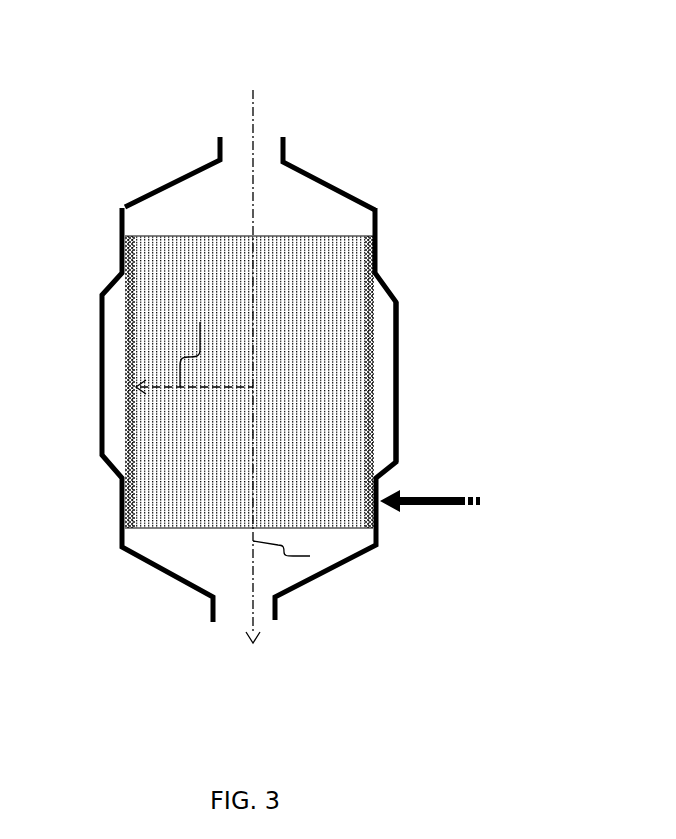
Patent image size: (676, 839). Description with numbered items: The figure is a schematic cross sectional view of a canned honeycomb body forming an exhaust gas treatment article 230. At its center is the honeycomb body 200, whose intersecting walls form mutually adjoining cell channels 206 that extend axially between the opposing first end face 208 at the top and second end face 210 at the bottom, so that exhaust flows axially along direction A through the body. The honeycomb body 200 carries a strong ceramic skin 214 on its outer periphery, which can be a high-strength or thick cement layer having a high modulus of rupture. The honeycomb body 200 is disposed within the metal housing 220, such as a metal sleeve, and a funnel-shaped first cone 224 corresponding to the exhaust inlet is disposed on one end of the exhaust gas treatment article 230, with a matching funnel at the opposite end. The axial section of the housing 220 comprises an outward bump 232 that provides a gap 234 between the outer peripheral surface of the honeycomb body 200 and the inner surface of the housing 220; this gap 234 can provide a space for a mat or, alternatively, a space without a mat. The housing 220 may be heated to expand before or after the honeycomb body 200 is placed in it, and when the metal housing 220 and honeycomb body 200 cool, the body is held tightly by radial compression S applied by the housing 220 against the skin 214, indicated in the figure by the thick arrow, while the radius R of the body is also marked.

The honeycomb body 200 is at (251, 428).
The cell channels 206 is at (330, 260).
The first end face 208 is at (180, 229).
The second end face 210 is at (204, 540).
The strong ceramic skin 214 is at (380, 313).
The metal housing 220 is at (391, 218).
The first cone 224 is at (352, 184).
The exhaust gas treatment article 230 is at (152, 78).
The outward bump 232 is at (397, 435).
The gap 234 is at (391, 417).